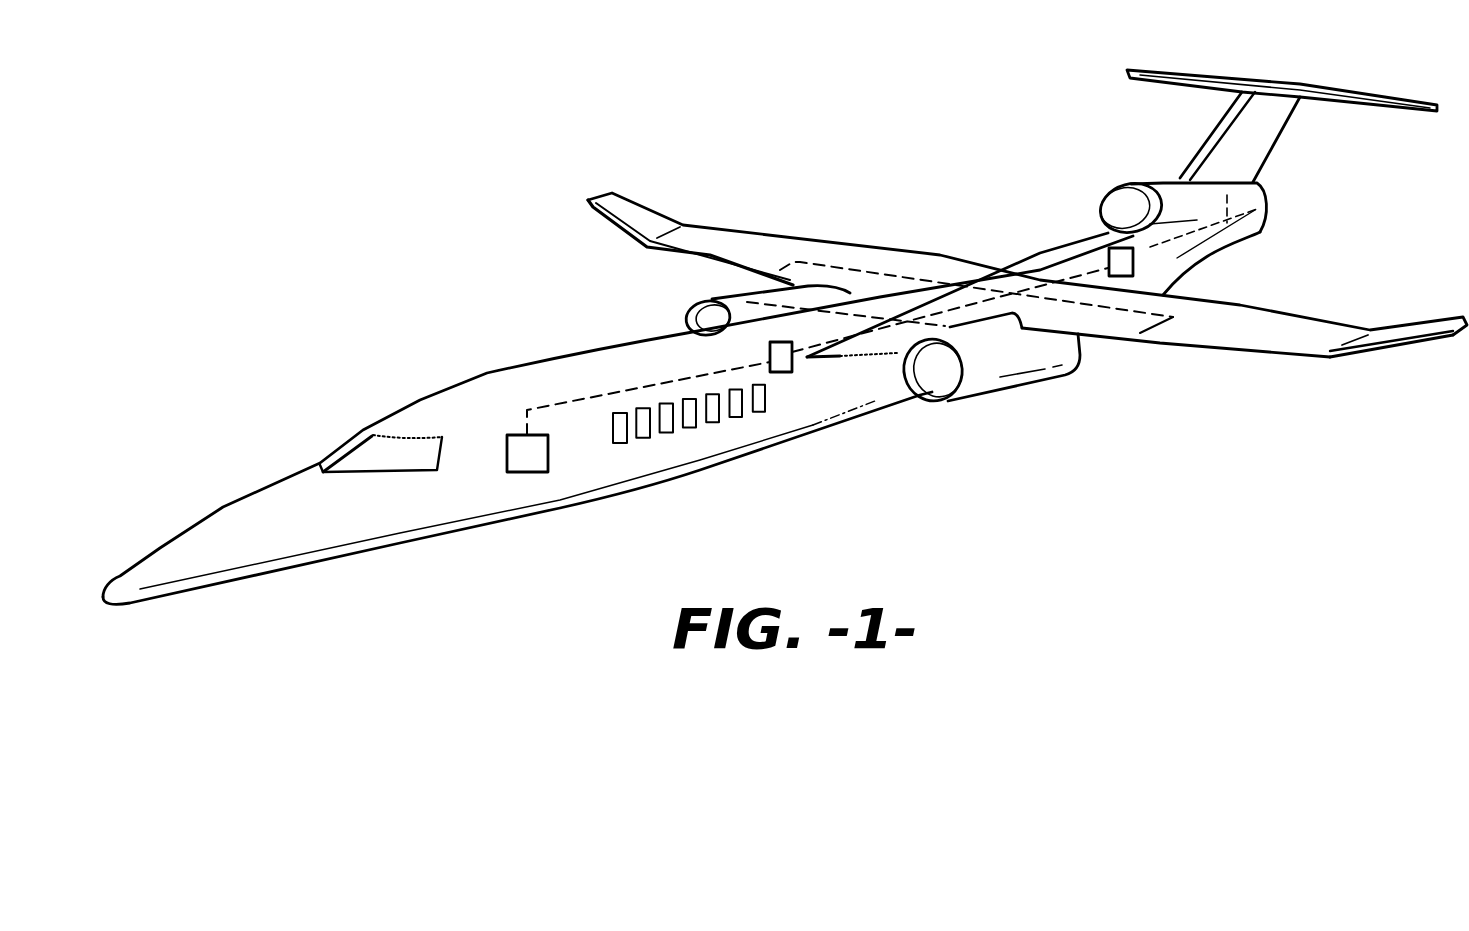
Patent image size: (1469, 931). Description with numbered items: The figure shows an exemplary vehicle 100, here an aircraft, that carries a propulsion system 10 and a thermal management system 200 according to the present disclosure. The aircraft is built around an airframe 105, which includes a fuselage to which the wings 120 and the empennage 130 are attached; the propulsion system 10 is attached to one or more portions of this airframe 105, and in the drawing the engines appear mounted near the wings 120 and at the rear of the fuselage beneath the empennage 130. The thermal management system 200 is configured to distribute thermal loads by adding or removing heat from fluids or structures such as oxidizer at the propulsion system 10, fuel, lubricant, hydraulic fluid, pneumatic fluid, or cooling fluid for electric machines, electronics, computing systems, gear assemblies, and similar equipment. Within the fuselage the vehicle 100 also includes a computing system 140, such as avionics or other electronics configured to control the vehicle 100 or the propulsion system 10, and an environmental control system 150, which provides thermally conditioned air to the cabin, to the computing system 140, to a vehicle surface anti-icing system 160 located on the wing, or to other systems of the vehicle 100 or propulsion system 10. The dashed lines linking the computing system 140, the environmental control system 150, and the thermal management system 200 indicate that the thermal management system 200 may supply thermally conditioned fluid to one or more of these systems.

The vehicle 100 is at (350, 173).
The airframe 105 is at (588, 312).
The propulsion system 10 is at (727, 301).
The wings 120 is at (780, 253).
The empennage 130 is at (1300, 144).
The computing system 140 is at (548, 452).
The environmental control system 150 is at (792, 365).
The vehicle surface anti-icing system 160 is at (1122, 350).
The thermal management system 200 is at (1107, 258).